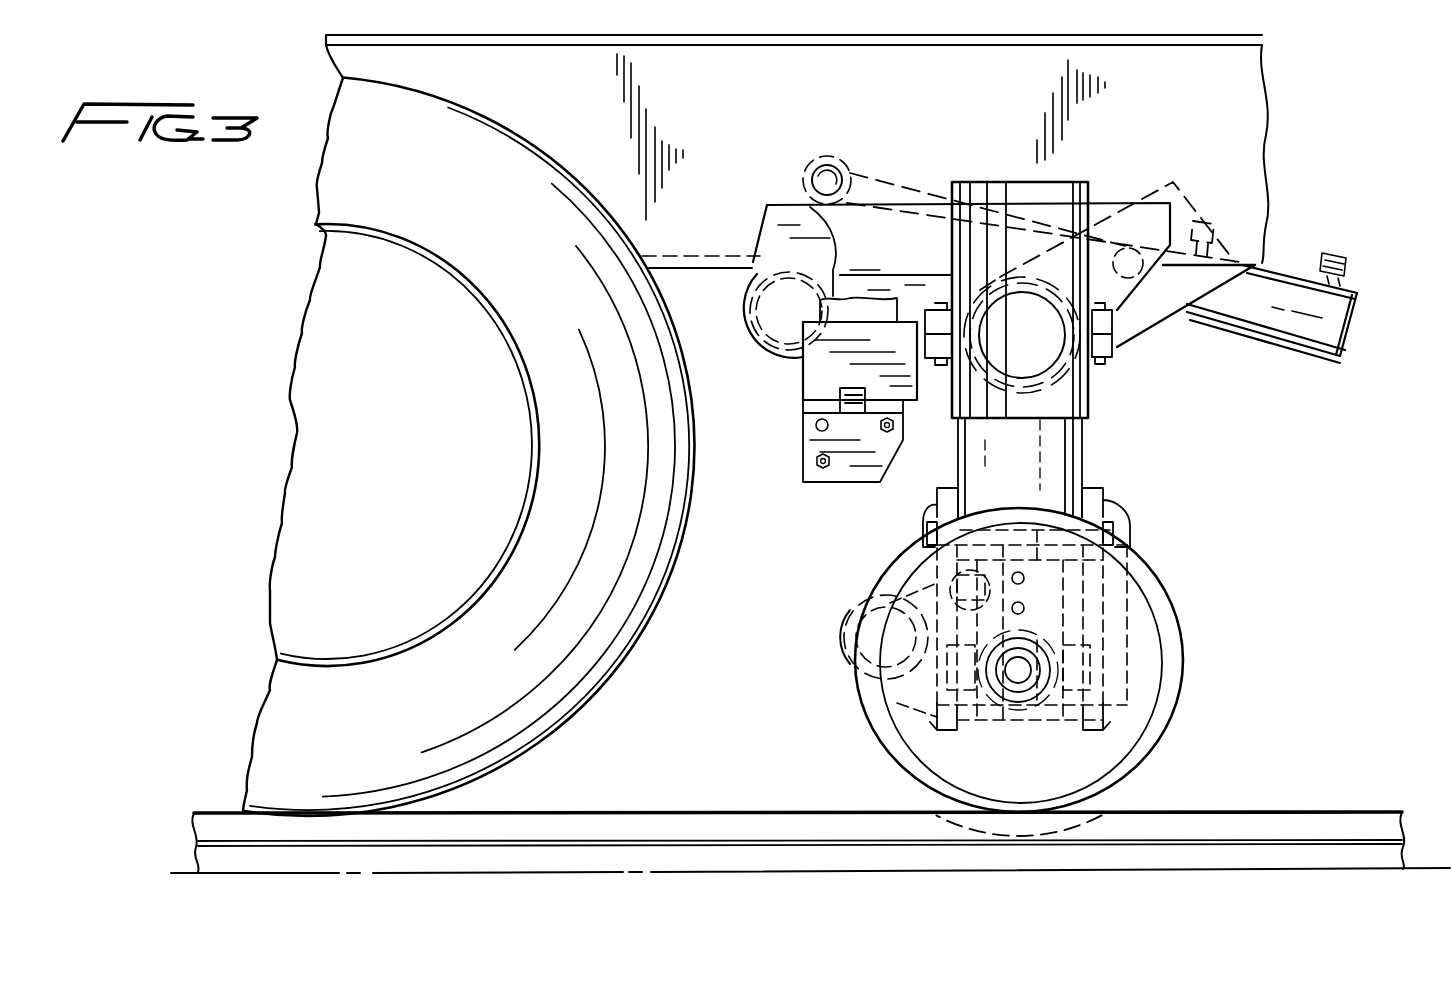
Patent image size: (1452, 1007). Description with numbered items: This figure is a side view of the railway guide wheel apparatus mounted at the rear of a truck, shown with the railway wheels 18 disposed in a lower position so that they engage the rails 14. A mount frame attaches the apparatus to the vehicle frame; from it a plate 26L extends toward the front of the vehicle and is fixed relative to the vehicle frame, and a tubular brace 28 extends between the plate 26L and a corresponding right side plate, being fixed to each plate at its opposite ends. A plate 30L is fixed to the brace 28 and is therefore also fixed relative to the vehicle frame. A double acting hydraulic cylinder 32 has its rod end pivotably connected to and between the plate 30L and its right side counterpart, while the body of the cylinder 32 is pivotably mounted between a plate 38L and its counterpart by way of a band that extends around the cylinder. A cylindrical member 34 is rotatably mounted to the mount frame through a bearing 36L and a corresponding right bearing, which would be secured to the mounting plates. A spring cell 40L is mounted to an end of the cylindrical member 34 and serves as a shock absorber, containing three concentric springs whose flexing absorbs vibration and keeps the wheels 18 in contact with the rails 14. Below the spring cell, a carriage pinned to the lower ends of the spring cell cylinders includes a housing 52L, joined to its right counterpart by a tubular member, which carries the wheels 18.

The rails 14 is at (1267, 810).
The railway wheels 18 is at (1177, 627).
The plate 26L is at (788, 363).
The tubular brace 28 is at (748, 300).
The plate 30L is at (827, 158).
The double acting hydraulic cylinder 32 is at (1285, 270).
The cylindrical member 34 is at (1090, 397).
The bearing 36L is at (1112, 357).
The plate 38L is at (1000, 238).
The spring cell 40L is at (1093, 380).
The housing 52L is at (1127, 525).